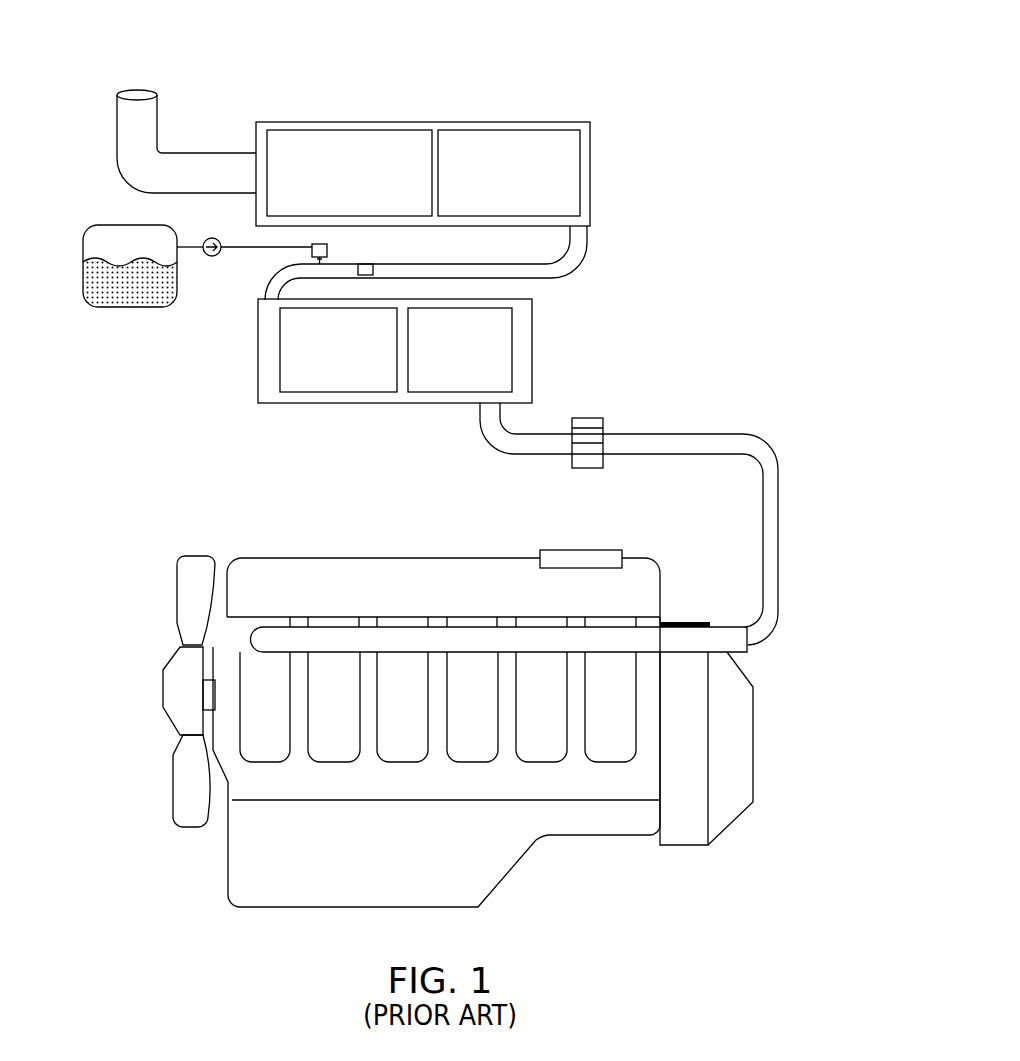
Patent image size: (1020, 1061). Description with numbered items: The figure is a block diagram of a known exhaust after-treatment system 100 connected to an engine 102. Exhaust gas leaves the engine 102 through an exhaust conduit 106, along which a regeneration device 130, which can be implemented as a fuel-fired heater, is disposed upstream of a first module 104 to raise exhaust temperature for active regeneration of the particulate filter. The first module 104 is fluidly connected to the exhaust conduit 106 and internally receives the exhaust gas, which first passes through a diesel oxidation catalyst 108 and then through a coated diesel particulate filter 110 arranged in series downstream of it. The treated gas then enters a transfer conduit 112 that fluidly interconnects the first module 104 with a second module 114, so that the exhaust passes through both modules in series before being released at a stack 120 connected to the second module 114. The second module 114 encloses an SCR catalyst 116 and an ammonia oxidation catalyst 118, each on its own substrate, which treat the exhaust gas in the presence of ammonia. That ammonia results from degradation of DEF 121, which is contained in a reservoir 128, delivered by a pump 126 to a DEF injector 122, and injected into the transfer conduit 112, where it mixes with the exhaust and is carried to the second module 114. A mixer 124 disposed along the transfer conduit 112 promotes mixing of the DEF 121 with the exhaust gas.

The exhaust after-treatment system 100 is at (614, 66).
The engine 102 is at (774, 731).
The first module 104 is at (532, 368).
The exhaust conduit 106 is at (698, 433).
The diesel oxidation catalyst 108 is at (503, 335).
The diesel particulate filter 110 is at (320, 388).
The transfer conduit 112 is at (590, 250).
The second module 114 is at (452, 122).
The SCR catalyst 116 is at (518, 128).
The ammonia oxidation catalyst 118 is at (318, 143).
The stack 120 is at (167, 170).
The DEF 121 is at (92, 308).
The DEF injector 122 is at (307, 253).
The mixer 124 is at (370, 263).
The pump 126 is at (208, 257).
The reservoir 128 is at (118, 274).
The regeneration device 130 is at (582, 468).